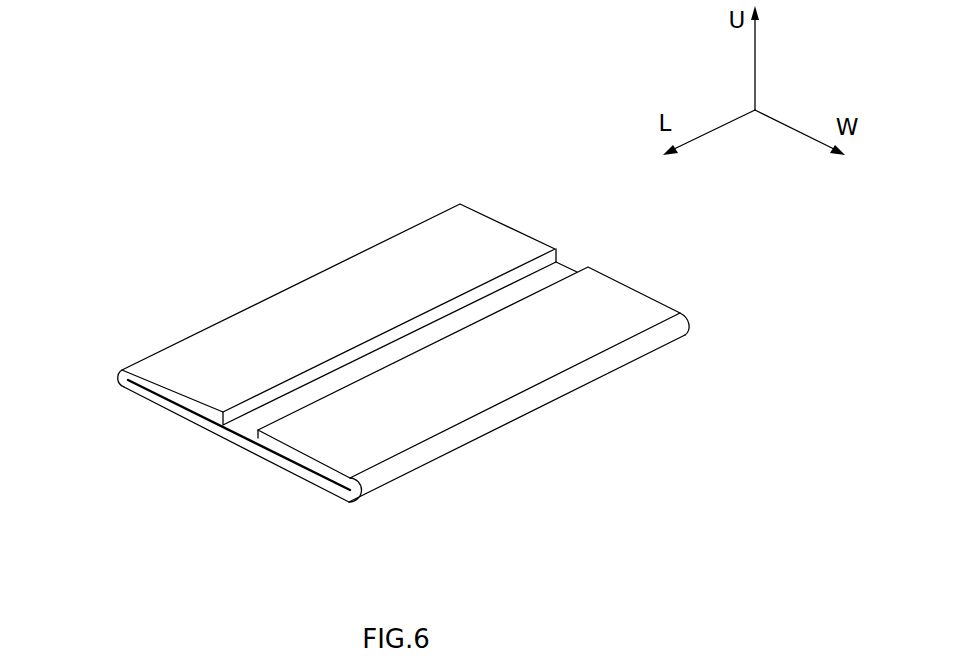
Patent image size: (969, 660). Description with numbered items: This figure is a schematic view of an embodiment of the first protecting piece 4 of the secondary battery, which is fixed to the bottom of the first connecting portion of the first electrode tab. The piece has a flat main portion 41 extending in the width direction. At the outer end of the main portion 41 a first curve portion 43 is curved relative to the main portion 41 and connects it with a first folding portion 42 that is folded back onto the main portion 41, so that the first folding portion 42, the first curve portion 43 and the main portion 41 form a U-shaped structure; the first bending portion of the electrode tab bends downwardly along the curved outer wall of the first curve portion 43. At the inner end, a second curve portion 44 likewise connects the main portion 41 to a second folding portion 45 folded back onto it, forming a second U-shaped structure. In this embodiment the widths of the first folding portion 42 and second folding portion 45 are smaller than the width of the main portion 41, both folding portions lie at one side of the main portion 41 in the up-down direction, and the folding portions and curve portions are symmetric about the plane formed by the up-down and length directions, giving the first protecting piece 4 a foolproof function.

The first protecting piece 4 is at (210, 197).
The main portion 41 is at (233, 440).
The first folding portion 42 is at (627, 308).
The first curve portion 43 is at (447, 445).
The second curve portion 44 is at (122, 371).
The second folding portion 45 is at (478, 238).